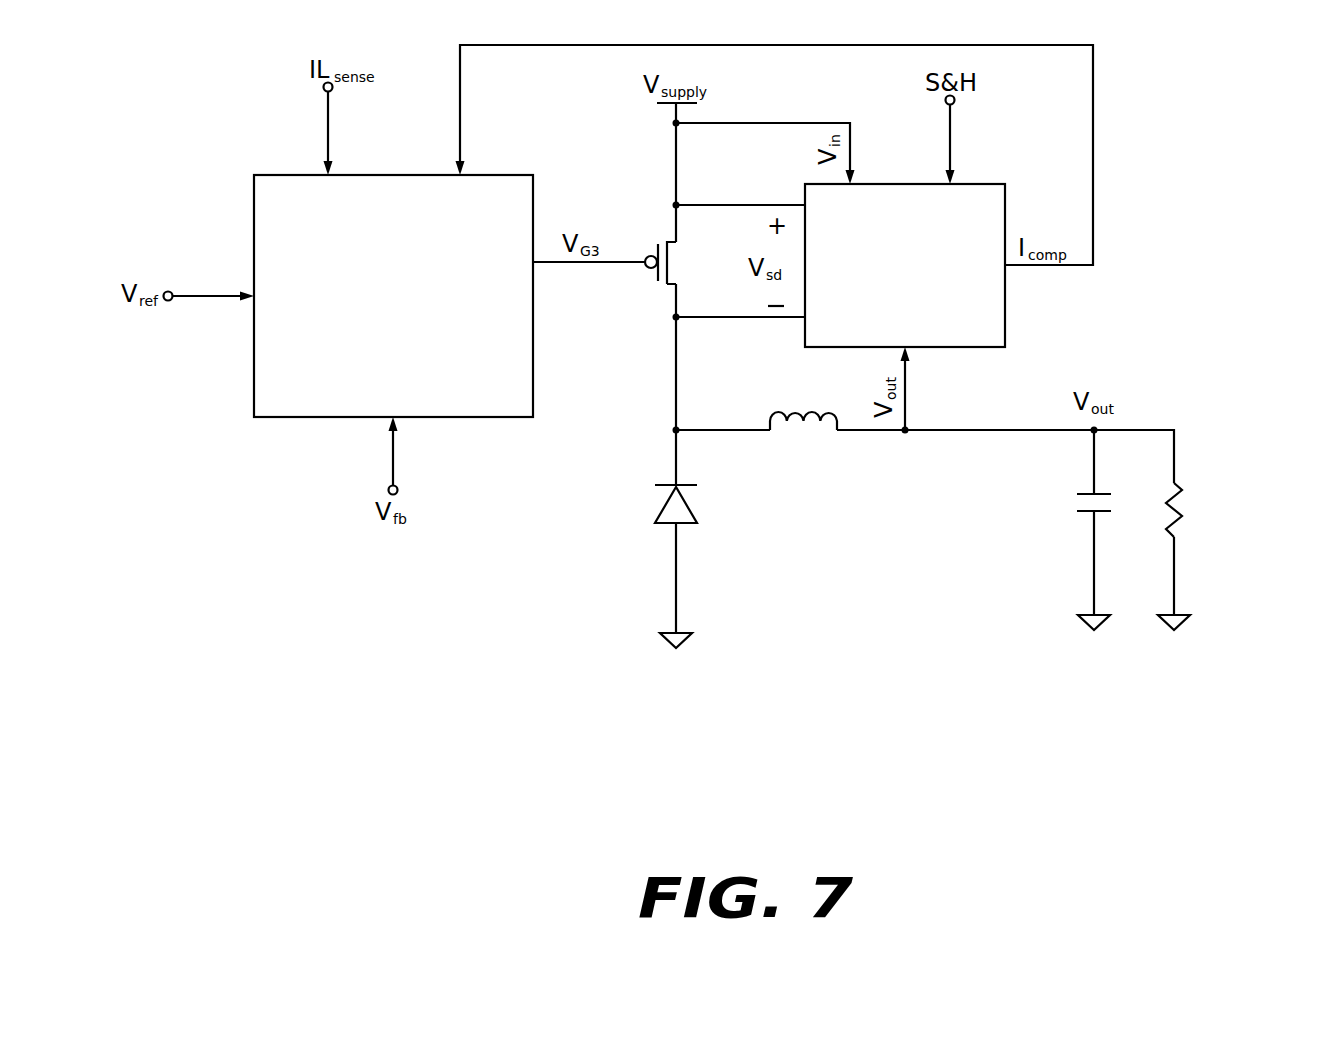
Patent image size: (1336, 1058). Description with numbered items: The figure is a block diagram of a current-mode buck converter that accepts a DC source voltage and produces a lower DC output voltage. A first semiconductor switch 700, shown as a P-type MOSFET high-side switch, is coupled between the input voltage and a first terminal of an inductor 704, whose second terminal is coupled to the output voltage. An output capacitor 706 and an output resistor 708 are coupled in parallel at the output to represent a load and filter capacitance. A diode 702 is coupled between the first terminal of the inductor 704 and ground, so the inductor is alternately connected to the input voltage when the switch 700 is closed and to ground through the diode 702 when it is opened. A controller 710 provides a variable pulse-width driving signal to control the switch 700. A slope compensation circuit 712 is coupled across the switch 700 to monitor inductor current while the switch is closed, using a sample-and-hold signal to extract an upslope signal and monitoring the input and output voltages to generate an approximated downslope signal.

The first semiconductor switch 700 is at (672, 240).
The diode 702 is at (664, 527).
The inductor 704 is at (797, 423).
The output capacitor 706 is at (1090, 513).
The output resistor 708 is at (1178, 487).
The controller 710 is at (292, 420).
The slope compensation circuit 712 is at (1005, 315).